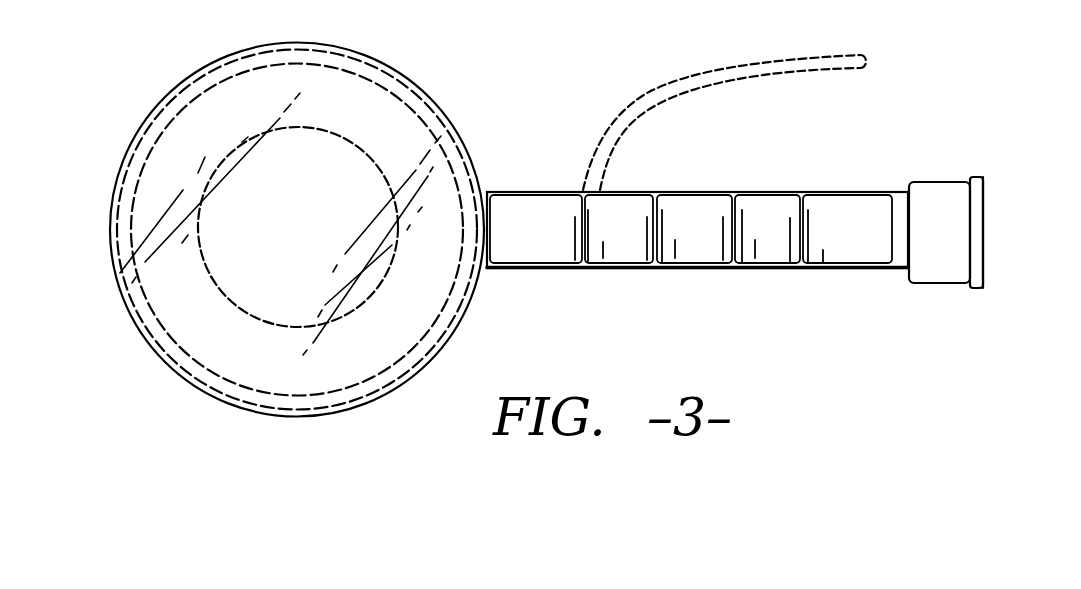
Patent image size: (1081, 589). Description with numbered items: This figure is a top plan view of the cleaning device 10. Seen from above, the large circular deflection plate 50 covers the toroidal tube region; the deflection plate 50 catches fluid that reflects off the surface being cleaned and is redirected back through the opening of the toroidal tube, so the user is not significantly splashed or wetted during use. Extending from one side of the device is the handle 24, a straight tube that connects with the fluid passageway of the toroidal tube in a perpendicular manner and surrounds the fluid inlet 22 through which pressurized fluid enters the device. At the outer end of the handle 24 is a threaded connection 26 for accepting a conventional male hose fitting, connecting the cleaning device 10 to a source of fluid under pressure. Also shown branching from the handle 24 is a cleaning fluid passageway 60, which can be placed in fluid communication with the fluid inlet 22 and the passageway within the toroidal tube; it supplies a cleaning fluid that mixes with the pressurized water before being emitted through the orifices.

The cleaning device 10 is at (270, 208).
The deflection plate 50 is at (173, 145).
The handle 24 is at (708, 270).
The threaded connection 26 is at (940, 182).
The fluid inlet 22 is at (998, 230).
The cleaning fluid passageway 60 is at (629, 103).